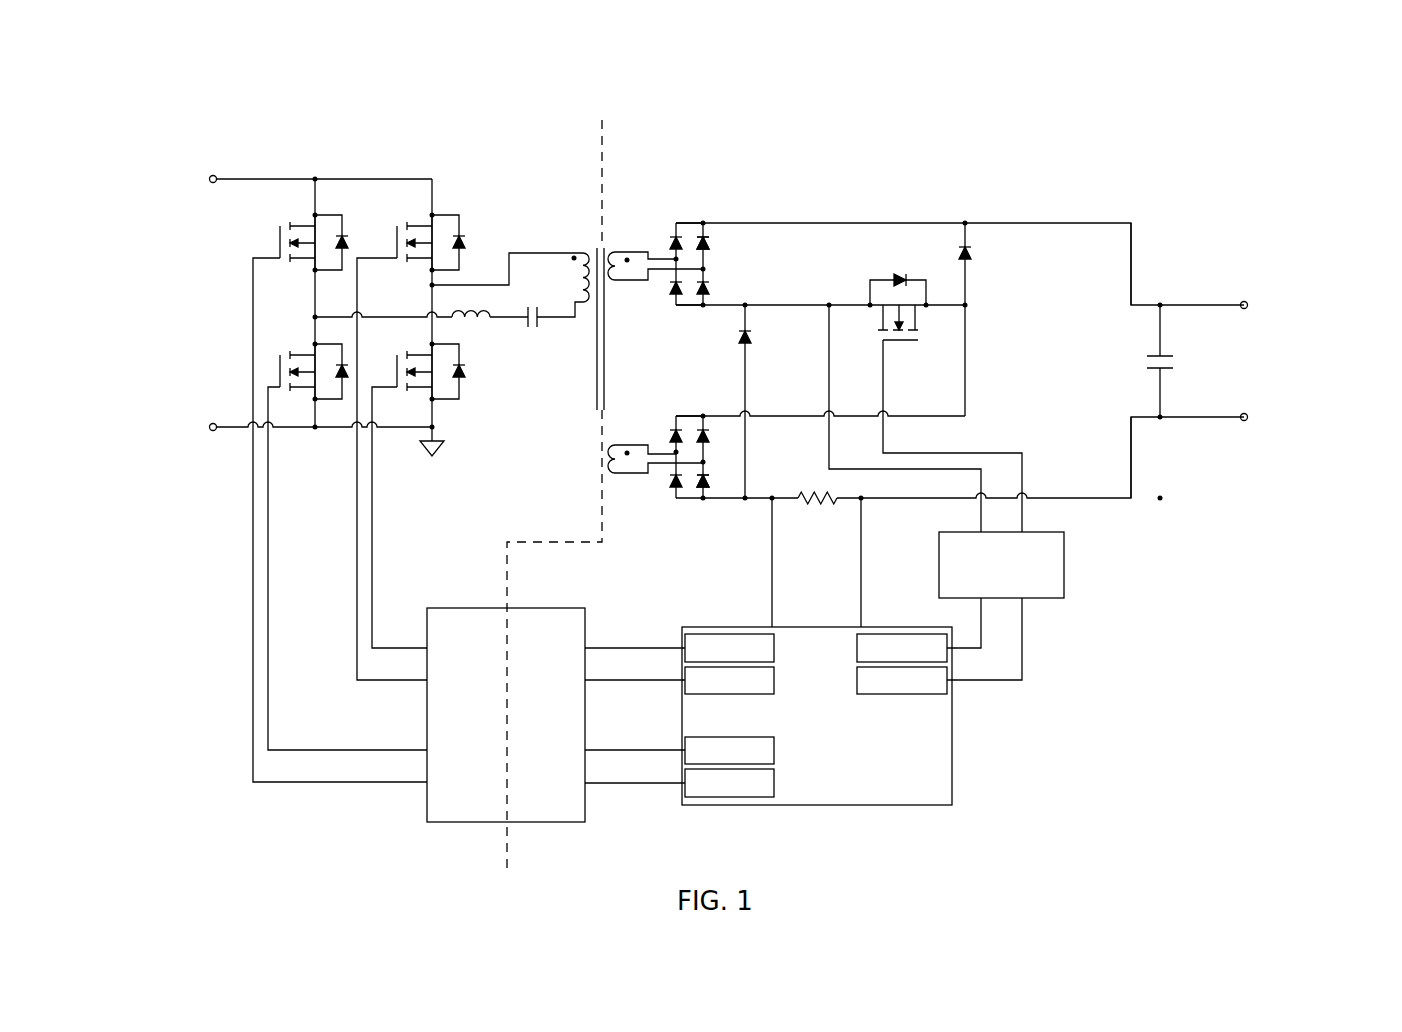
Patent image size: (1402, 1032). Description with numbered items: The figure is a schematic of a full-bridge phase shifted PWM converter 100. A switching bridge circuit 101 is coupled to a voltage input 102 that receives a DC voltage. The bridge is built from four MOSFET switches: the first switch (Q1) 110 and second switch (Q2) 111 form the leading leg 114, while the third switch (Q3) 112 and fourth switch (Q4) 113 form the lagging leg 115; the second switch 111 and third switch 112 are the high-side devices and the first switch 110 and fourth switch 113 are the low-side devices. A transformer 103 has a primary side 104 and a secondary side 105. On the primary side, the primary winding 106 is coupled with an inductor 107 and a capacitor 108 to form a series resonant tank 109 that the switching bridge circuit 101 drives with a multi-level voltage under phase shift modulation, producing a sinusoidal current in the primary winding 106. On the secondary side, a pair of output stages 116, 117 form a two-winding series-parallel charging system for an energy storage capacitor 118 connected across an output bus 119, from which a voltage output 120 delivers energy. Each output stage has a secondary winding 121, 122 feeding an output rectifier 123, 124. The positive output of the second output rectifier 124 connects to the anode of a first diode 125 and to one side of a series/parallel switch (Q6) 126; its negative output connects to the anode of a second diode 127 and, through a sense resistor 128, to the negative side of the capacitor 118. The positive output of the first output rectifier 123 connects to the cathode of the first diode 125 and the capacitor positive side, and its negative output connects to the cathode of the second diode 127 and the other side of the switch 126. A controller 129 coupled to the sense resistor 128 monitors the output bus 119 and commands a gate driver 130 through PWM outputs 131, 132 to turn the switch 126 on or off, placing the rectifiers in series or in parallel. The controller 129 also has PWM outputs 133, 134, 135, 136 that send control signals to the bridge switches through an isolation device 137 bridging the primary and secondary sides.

The full-bridge phase shifted PWM converter 100 is at (222, 80).
The switching bridge circuit 101 is at (358, 110).
The voltage input 102 is at (181, 291).
The transformer 103 is at (584, 246).
The primary side 104 is at (577, 134).
The secondary side 105 is at (662, 134).
The primary winding 106 is at (584, 308).
The inductor 107 is at (490, 322).
The capacitor 108 is at (541, 330).
The series resonant tank 109 is at (510, 237).
The first switch (Q1) 110 is at (271, 375).
The second switch (Q2) 111 is at (272, 236).
The third switch (Q3) 112 is at (441, 203).
The fourth switch (Q4) 113 is at (446, 414).
The leading leg 114 is at (320, 163).
The lagging leg 115 is at (422, 163).
The first output stage 116 is at (645, 216).
The second output stage 117 is at (645, 408).
The energy storage capacitor 118 is at (1155, 371).
The output bus 119 is at (1131, 250).
The voltage output 120 is at (1274, 352).
The first secondary winding 121 is at (613, 283).
The second secondary winding 122 is at (613, 476).
The first output rectifier 123 is at (727, 258).
The second output rectifier 124 is at (724, 440).
The first diode 125 is at (969, 257).
The series/parallel switch (Q6) 126 is at (895, 276).
The second diode 127 is at (749, 341).
The sense resistor 128 is at (811, 505).
The controller 129 is at (952, 745).
The gate driver 130 is at (1064, 562).
The PWM output (PWM5) 131 is at (910, 634).
The PWM output (PWM6) 132 is at (918, 695).
The PWM output (PWM1) 133 is at (691, 740).
The PWM output (PWM2) 134 is at (738, 798).
The PWM output (PWM3) 135 is at (775, 681).
The PWM output (PWM4) 136 is at (722, 634).
The isolation device 137 is at (451, 609).